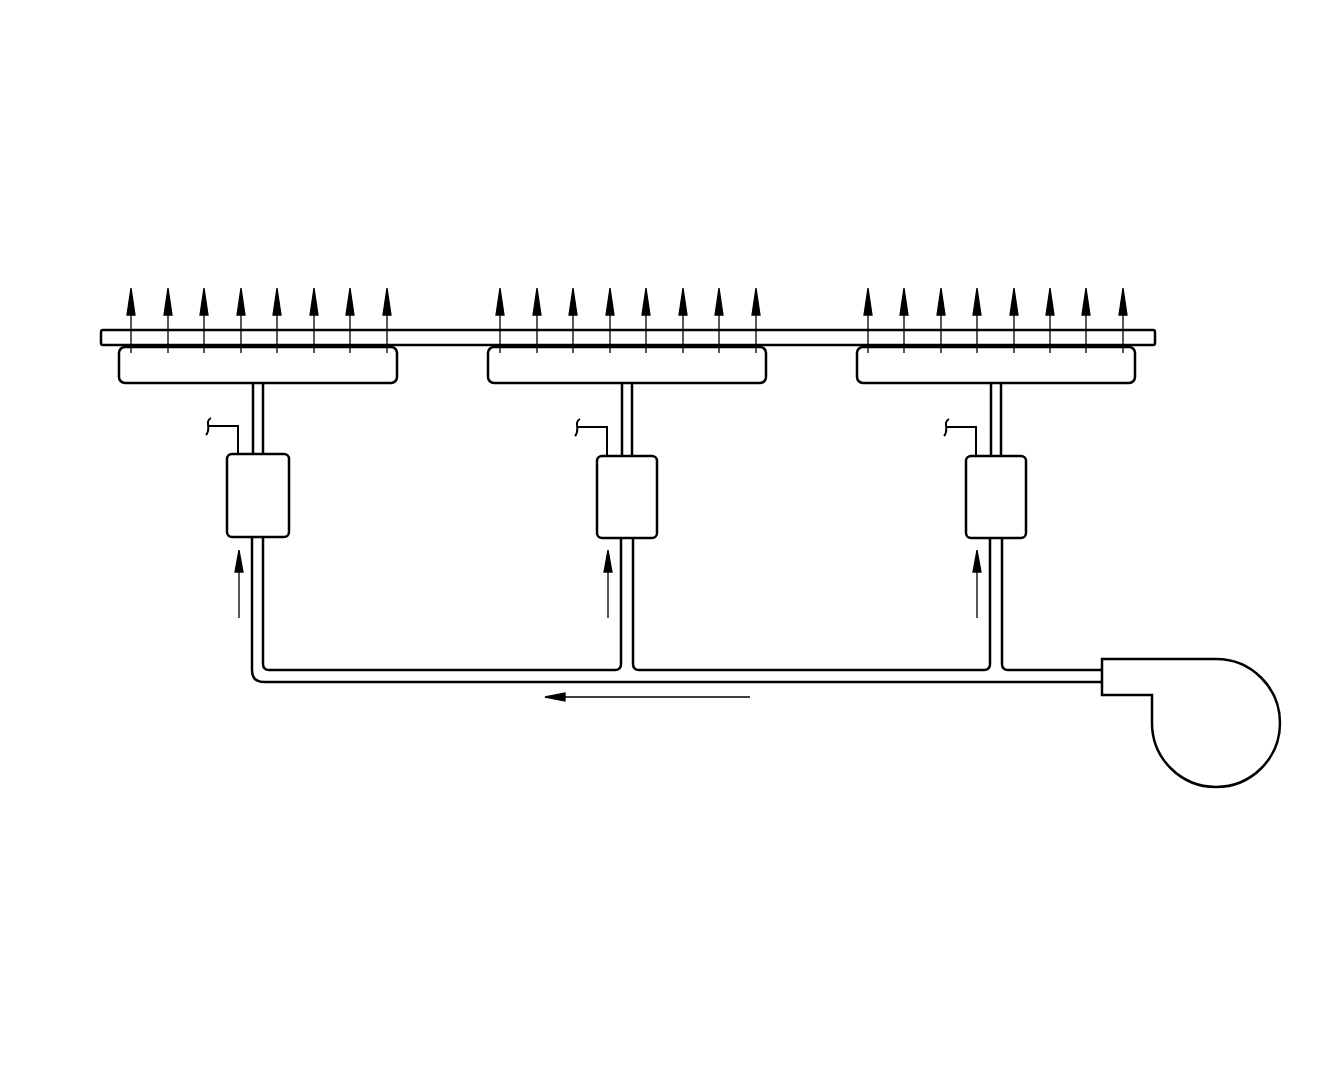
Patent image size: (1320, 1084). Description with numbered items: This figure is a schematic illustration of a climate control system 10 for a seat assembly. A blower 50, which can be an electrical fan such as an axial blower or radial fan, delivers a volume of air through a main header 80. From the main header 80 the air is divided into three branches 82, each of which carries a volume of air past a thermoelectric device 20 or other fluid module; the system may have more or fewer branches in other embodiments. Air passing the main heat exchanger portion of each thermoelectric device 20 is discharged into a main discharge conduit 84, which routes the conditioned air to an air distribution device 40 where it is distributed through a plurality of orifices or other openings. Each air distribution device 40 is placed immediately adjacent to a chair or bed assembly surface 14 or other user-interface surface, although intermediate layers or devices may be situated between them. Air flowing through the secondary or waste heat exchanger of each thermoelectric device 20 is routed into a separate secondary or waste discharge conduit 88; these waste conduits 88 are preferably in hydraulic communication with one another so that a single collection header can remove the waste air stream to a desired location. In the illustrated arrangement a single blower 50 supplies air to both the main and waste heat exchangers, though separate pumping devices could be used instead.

The climate control system 10 is at (1230, 184).
The chair or bed assembly surface 14 is at (1028, 330).
The air distribution device 40 is at (157, 369).
The main discharge conduit 84 is at (265, 430).
The secondary or waste discharge conduit 88 is at (235, 442).
The thermoelectric device 20 is at (277, 502).
The branch 82 is at (265, 620).
The main header 80 is at (870, 686).
The blower 50 is at (1207, 747).